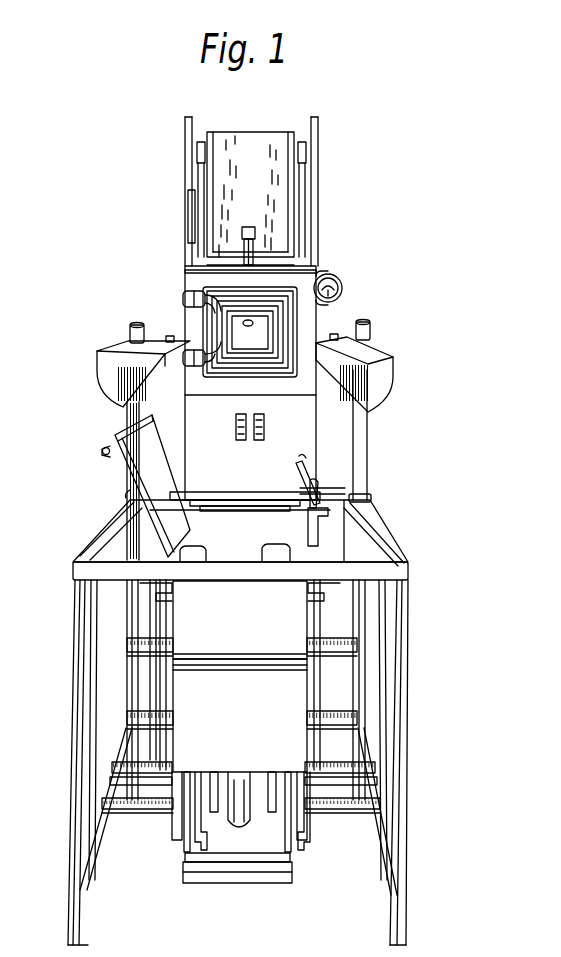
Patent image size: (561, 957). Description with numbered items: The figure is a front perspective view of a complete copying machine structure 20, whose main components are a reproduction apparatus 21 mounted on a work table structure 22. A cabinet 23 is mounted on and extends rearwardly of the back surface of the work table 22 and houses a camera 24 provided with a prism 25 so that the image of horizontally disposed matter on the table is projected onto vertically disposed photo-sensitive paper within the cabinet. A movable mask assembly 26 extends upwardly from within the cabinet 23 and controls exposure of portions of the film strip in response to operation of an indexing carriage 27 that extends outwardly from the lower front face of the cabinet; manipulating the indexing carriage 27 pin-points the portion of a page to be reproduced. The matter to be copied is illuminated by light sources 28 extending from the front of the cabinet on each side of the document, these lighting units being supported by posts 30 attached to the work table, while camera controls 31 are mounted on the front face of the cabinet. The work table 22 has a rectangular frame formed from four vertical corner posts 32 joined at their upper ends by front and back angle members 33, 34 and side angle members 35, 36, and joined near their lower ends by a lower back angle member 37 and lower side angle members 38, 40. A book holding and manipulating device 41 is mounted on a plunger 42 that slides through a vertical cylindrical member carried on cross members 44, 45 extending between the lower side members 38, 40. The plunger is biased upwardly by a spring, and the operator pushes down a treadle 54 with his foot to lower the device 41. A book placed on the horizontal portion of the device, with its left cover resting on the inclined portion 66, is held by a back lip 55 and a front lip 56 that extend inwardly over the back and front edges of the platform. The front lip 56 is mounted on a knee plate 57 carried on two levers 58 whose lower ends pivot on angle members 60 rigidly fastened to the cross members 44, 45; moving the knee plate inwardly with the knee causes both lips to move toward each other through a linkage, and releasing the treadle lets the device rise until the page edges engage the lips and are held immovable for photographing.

The copying machine structure 20 is at (400, 342).
The reproduction apparatus 21 is at (182, 303).
The work table structure 22 is at (408, 612).
The cabinet 23 is at (316, 428).
The camera 24 is at (292, 330).
The prism 25 is at (252, 321).
The movable mask assembly 26 is at (280, 212).
The indexing carriage 27 is at (316, 488).
The light sources 28 is at (97, 368).
The posts 30 is at (126, 410).
The camera controls 31 is at (257, 441).
The vertical corner posts 32 is at (126, 628).
The front angle member 33 is at (265, 581).
The back angle member 34 is at (335, 490).
The side angle member 35 is at (104, 533).
The side angle member 36 is at (384, 536).
The lower back angle member 37 is at (150, 722).
The lower side angle member 38 is at (90, 843).
The lower side angle member 40 is at (384, 855).
The book holding and manipulating device 41 is at (263, 549).
The plunger 42 is at (241, 826).
The cross member 44 is at (149, 765).
The cross member 45 is at (116, 808).
The treadle 54 is at (248, 883).
The back lip 55 is at (228, 507).
The front lip 56 is at (276, 560).
The knee plate 57 is at (251, 722).
The levers 58 is at (177, 842).
The angle members 60 is at (166, 836).
The inclined portion 66 is at (150, 476).